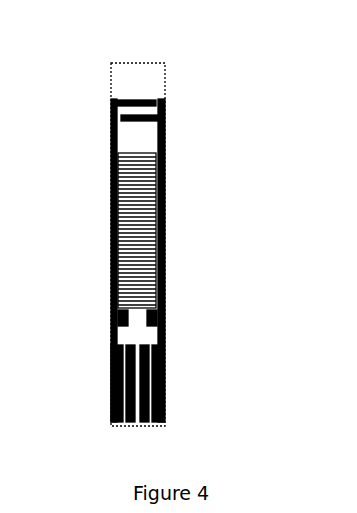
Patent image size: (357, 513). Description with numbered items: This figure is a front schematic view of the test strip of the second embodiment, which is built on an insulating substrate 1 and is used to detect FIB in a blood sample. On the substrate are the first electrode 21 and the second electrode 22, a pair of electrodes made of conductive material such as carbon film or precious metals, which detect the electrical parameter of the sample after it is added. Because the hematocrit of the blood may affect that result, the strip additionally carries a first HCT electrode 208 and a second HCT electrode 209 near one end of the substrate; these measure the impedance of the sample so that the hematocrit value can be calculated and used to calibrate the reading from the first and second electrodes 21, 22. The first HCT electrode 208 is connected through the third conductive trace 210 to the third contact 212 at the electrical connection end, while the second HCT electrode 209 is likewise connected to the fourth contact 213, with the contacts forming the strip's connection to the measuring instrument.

The insulating substrate 1 is at (141, 76).
The first HCT electrode 208 is at (122, 117).
The second HCT electrode 209 is at (155, 103).
The third conductive trace 210 is at (112, 222).
The third contact 212 is at (162, 222).
The fourth contact 213 is at (165, 417).
The first electrode 21 is at (122, 328).
The second electrode 22 is at (150, 328).